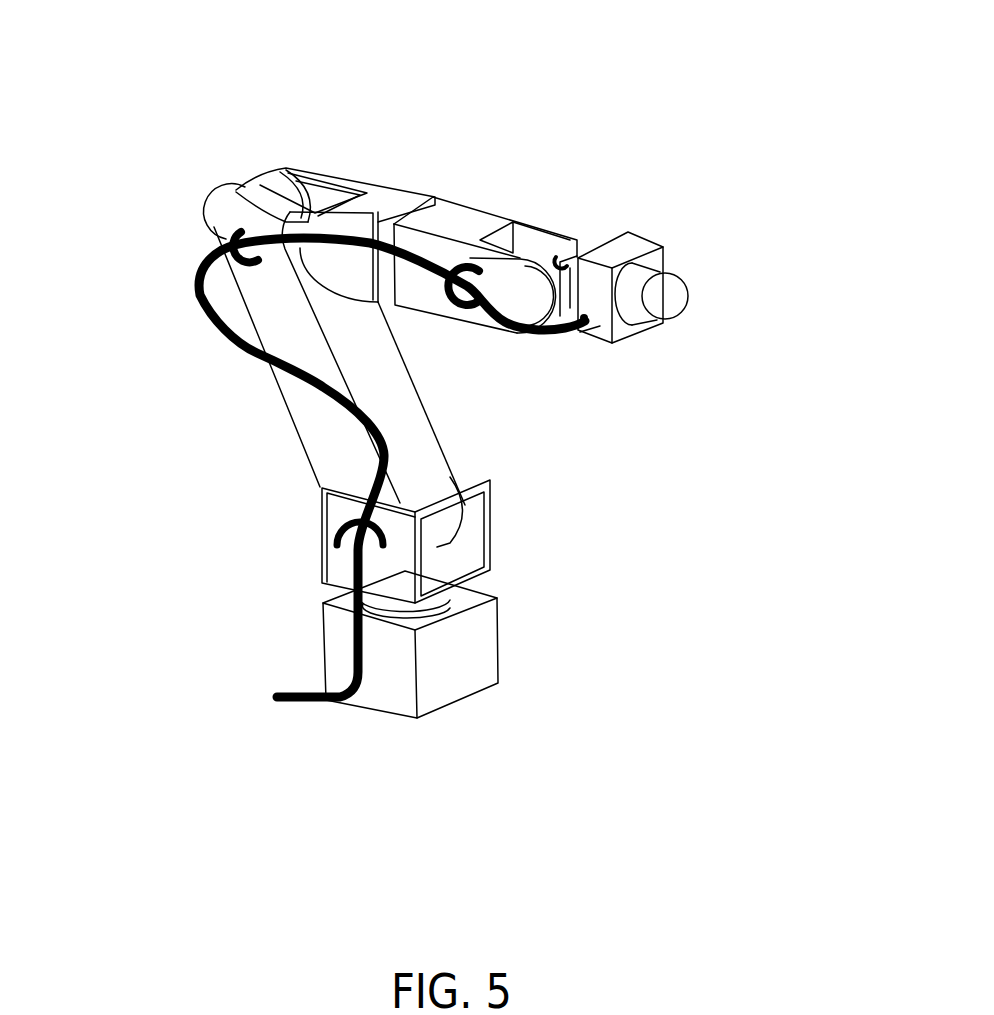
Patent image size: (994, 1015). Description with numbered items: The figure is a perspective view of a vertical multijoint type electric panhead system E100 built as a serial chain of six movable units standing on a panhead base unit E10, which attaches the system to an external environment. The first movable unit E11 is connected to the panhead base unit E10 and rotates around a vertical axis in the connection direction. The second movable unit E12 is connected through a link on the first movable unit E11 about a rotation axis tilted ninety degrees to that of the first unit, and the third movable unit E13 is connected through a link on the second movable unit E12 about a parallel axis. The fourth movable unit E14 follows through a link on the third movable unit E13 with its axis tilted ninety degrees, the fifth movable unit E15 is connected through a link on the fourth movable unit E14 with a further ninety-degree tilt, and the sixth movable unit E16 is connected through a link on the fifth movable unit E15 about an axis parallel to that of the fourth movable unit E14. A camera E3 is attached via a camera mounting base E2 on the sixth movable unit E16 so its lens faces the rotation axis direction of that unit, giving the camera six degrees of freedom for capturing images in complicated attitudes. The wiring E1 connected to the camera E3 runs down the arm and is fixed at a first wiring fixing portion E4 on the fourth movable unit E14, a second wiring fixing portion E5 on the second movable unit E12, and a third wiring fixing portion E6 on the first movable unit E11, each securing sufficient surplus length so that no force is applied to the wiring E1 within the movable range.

The panhead system E100 is at (872, 40).
The wiring E1 is at (222, 338).
The camera mounting base E2 is at (630, 337).
The camera E3 is at (663, 243).
The first wiring fixing portion E4 is at (457, 262).
The second wiring fixing portion E5 is at (243, 250).
The third wiring fixing portion E6 is at (423, 550).
The panhead base unit E10 is at (343, 633).
The first movable unit E11 is at (343, 567).
The second movable unit E12 is at (343, 477).
The third movable unit E13 is at (340, 177).
The fourth movable unit E14 is at (481, 222).
The fifth movable unit E15 is at (566, 262).
The sixth movable unit E16 is at (585, 337).